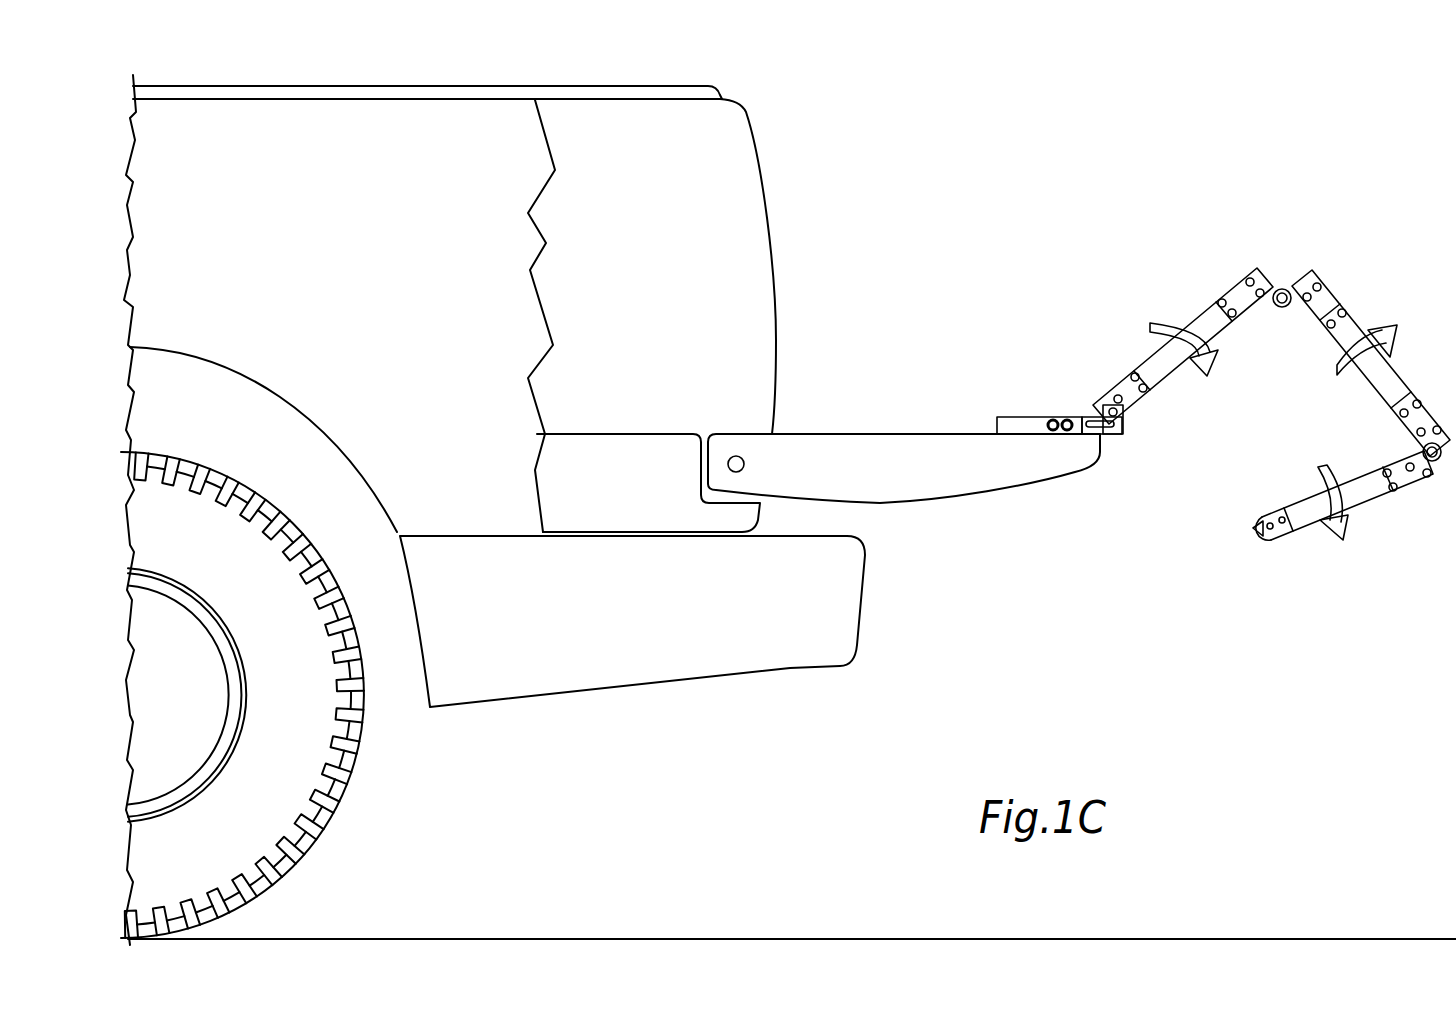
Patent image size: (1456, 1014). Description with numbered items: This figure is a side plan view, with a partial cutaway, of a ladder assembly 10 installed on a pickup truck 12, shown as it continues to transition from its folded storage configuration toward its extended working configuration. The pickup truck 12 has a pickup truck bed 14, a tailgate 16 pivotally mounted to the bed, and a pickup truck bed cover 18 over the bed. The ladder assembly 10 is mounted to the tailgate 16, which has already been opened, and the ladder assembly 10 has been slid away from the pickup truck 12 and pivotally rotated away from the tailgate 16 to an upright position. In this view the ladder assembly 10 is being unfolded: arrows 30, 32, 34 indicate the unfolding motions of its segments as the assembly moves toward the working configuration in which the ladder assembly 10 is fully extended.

The ladder assembly 10 is at (1190, 275).
The pickup truck 12 is at (401, 344).
The pickup truck bed 14 is at (640, 434).
The tailgate 16 is at (877, 434).
The pickup truck bed cover 18 is at (716, 86).
The arrow 30 is at (1152, 322).
The arrow 32 is at (1345, 370).
The arrow 34 is at (1312, 475).